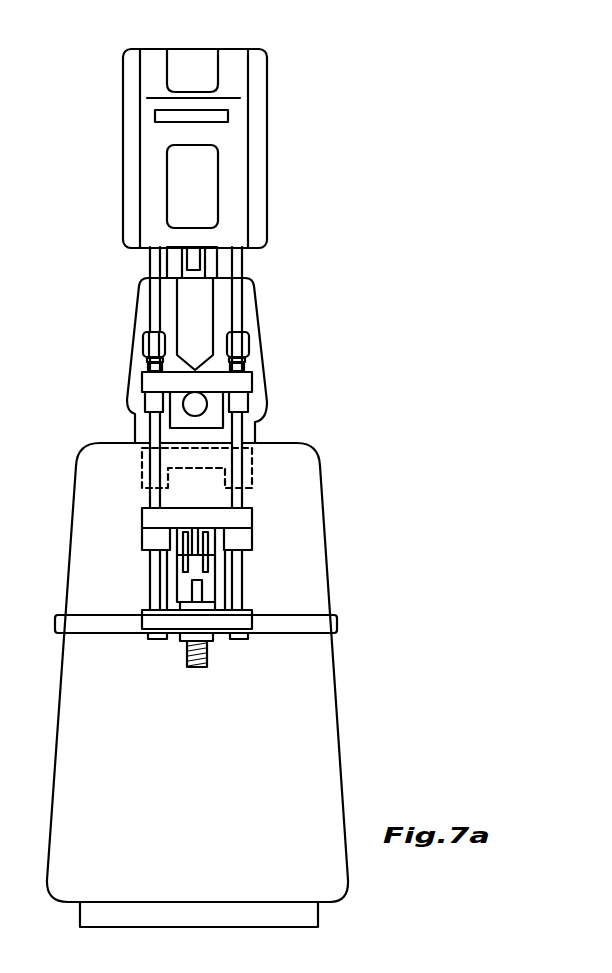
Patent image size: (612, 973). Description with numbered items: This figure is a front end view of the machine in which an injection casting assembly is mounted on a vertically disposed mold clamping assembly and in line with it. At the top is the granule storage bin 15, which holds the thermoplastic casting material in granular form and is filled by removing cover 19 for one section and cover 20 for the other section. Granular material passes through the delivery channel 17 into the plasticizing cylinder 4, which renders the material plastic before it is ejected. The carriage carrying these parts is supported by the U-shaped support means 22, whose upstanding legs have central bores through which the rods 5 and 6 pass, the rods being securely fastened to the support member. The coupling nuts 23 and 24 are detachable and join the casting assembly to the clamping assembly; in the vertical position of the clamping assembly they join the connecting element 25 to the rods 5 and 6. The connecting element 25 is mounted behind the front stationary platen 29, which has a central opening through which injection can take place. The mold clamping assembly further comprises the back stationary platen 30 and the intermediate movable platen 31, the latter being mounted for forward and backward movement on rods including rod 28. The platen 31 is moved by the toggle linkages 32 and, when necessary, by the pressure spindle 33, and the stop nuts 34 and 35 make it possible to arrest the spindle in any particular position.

The plasticizing cylinder 4 is at (200, 315).
The rod 5 is at (153, 260).
The rod 6 is at (236, 263).
The granule storage bin 15 is at (147, 110).
The delivery channel 17 is at (192, 258).
The cover 19 is at (175, 163).
The cover 20 is at (199, 58).
The U-shaped support means 22 is at (250, 430).
The coupling nut 23 is at (243, 348).
The coupling nut 24 is at (152, 338).
The connecting element 25 is at (152, 396).
The rod 28 is at (237, 500).
The front stationary platen 29 is at (248, 383).
The back stationary platen 30 is at (247, 618).
The intermediate movable platen 31 is at (240, 520).
The toggle linkage 32 is at (208, 583).
The pressure spindle 33 is at (198, 668).
The stop nut 34 is at (209, 634).
The stop nut 35 is at (181, 607).